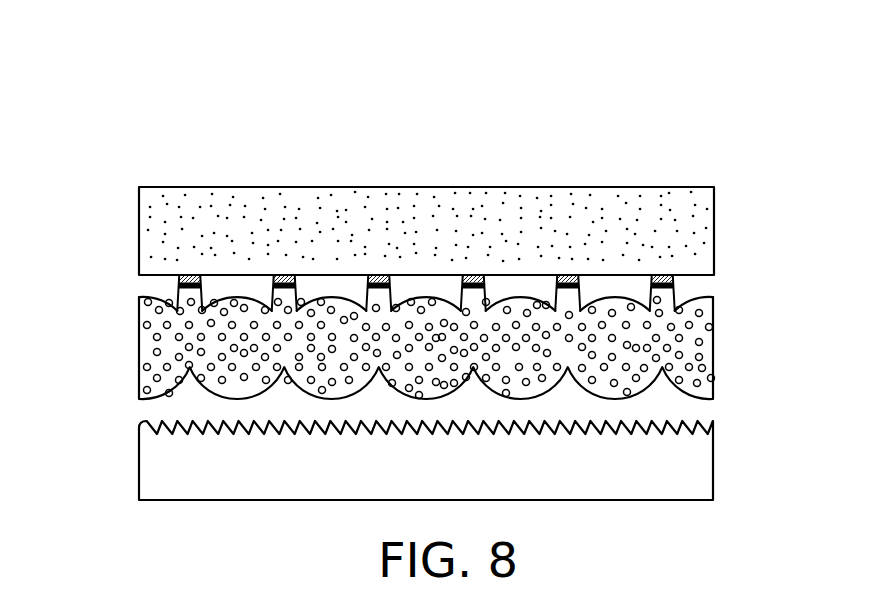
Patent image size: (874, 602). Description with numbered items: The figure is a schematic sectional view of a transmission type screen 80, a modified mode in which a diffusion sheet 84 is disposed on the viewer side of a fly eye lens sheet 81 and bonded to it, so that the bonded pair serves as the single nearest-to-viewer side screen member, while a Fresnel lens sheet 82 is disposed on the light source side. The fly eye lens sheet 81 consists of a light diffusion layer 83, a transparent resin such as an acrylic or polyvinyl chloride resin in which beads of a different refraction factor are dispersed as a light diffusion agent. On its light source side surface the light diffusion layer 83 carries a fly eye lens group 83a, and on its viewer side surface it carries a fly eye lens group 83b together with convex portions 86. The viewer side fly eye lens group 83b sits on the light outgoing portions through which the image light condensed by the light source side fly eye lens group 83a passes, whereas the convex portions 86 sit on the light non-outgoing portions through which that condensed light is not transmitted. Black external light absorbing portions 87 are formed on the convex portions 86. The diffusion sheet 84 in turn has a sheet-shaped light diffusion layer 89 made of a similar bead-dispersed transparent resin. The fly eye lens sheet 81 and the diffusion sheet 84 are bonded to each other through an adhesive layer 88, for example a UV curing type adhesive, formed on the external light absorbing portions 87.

The transmission type screen 80 is at (595, 89).
The fly eye lens sheet 81 is at (437, 317).
The Fresnel lens sheet 82 is at (118, 455).
The light diffusion layer 83 is at (489, 371).
The fly eye lens group 83a is at (677, 390).
The fly eye lens group 83b is at (673, 308).
The diffusion sheet 84 is at (374, 200).
The convex portions 86 is at (673, 302).
The external light absorbing portions 87 is at (666, 285).
The adhesive layer 88 is at (665, 278).
The light diffusion layer 89 is at (678, 202).